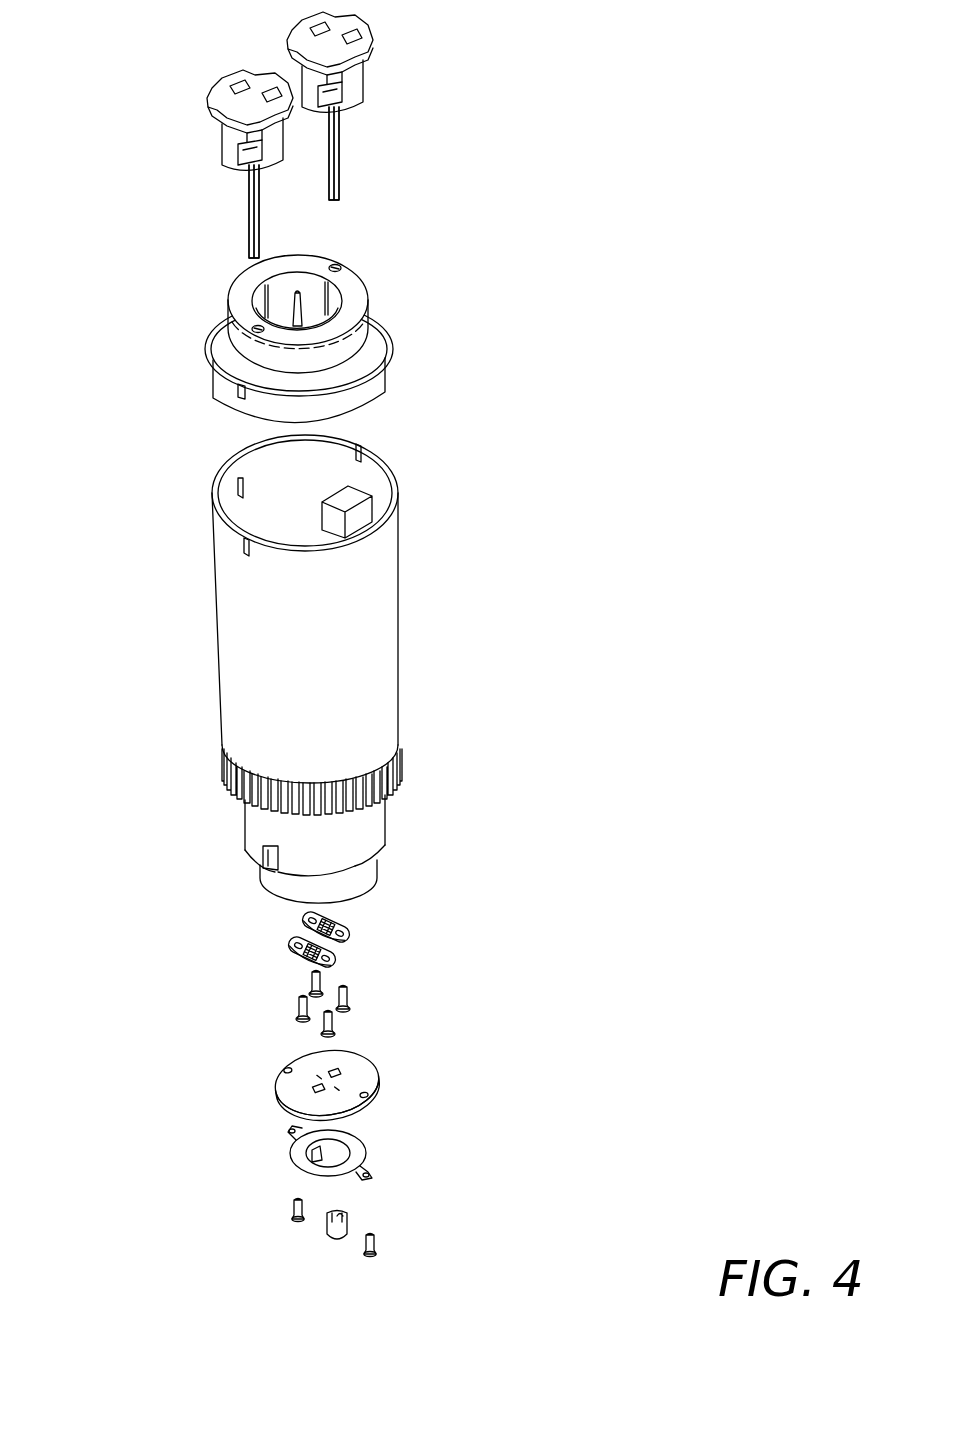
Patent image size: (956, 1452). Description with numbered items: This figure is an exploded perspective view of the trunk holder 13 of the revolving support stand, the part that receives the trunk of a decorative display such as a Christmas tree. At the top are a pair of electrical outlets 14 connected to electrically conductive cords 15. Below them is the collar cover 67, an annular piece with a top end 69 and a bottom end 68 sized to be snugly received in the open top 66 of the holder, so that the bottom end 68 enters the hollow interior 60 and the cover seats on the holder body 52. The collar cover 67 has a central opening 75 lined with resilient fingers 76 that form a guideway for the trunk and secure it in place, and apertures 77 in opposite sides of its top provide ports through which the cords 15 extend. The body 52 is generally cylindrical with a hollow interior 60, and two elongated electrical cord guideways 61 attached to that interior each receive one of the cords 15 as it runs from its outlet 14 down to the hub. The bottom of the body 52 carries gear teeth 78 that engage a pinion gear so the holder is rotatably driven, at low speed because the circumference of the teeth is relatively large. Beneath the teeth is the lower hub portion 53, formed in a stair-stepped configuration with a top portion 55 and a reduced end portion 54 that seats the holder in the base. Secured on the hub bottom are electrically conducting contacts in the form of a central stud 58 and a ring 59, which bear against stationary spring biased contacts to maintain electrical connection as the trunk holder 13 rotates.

The trunk holder 13 is at (278, 841).
The electrical outlets 14 is at (222, 138).
The electrically conductive cords 15 is at (248, 215).
The body 52 is at (400, 606).
The lower hub portion 53 is at (386, 820).
The end portion 54 is at (340, 893).
The top portion 55 is at (343, 848).
The central stud 58 is at (347, 1223).
The ring 59 is at (368, 1157).
The hollow interior 60 is at (295, 604).
The electrical cord guideways 61 is at (372, 498).
The open top 66 is at (300, 467).
The collar cover 67 is at (313, 294).
The bottom end 68 is at (370, 388).
The top end 69 is at (355, 298).
The central opening 75 is at (345, 276).
The resilient fingers 76 is at (278, 302).
The apertures 77 is at (335, 268).
The gear teeth 78 is at (395, 765).